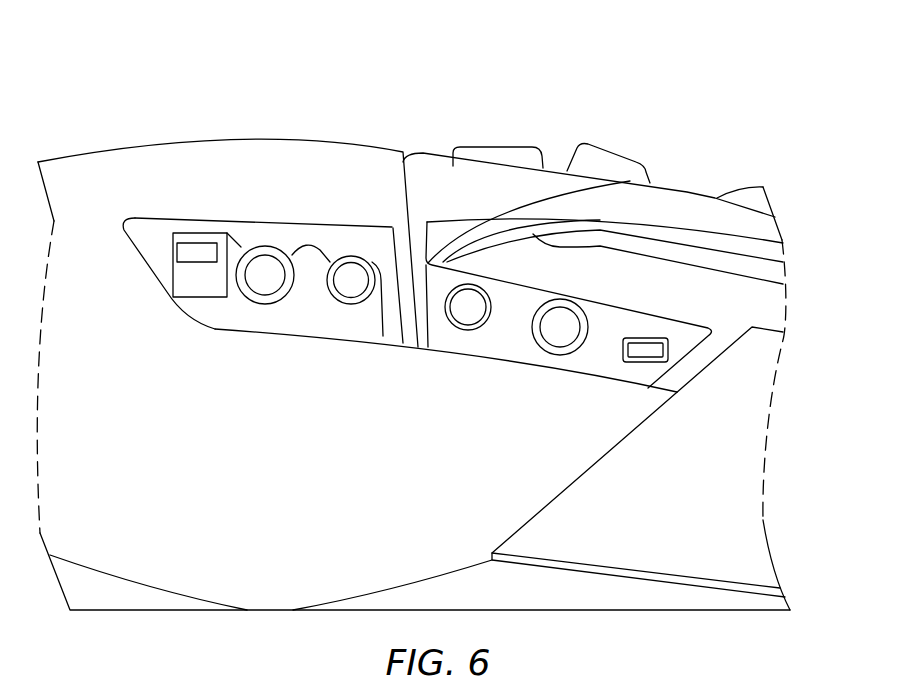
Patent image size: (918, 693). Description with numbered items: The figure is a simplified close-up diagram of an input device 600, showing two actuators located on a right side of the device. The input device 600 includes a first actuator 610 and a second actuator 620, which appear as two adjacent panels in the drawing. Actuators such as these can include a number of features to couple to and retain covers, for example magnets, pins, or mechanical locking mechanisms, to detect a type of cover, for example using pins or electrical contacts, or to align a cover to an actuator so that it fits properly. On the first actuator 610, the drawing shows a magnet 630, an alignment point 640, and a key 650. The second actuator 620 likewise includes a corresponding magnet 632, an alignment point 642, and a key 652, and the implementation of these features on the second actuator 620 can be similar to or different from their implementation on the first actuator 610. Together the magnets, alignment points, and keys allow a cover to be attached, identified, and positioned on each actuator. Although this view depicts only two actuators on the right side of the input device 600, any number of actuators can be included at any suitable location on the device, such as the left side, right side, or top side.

The input device 600 is at (184, 93).
The first actuator 610 is at (280, 250).
The second actuator 620 is at (565, 287).
The magnet 630 is at (260, 297).
The alignment point 640 is at (343, 307).
The alignment point 642 is at (465, 330).
The magnet 632 is at (555, 338).
The key 650 is at (197, 253).
The key 652 is at (648, 350).